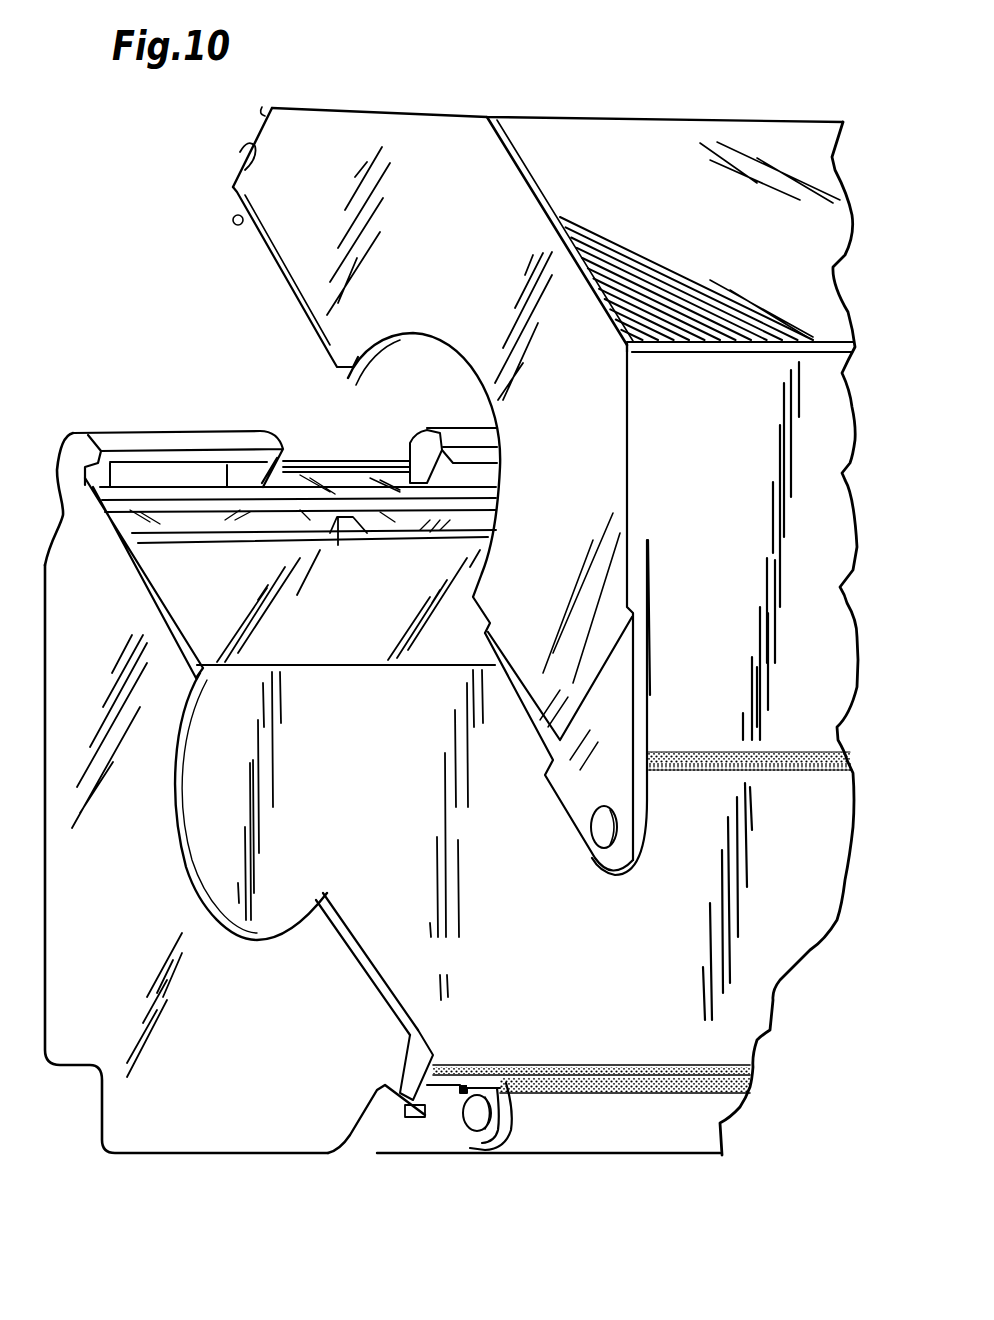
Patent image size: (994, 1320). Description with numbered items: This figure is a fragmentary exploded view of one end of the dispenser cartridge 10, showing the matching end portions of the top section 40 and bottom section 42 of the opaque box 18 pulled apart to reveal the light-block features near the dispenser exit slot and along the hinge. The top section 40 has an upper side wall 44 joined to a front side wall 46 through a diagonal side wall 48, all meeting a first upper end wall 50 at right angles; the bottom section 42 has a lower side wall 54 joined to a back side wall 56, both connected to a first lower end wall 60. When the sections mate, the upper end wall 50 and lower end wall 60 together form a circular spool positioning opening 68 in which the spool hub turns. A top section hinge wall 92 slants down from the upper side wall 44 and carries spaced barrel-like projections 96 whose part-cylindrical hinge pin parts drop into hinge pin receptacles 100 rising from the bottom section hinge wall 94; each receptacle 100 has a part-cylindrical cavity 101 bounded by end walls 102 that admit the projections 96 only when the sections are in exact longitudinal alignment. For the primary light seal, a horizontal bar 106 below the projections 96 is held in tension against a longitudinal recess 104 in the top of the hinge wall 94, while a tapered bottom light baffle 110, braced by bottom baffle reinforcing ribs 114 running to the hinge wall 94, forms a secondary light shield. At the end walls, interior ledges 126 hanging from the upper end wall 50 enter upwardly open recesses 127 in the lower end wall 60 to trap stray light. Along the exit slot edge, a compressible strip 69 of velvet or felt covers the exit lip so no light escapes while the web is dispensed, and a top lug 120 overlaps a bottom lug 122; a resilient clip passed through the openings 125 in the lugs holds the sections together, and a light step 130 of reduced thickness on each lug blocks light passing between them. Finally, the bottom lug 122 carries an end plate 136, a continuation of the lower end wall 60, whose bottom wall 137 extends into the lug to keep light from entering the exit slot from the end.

The dispenser cartridge 10 is at (616, 101).
The box 18 is at (493, 117).
The top section 40 is at (757, 130).
The bottom section 42 is at (687, 1137).
The upper side wall 44 is at (413, 110).
The front side wall 46 is at (827, 422).
The diagonal side wall 48 is at (820, 228).
The first upper end wall 50 is at (347, 127).
The lower side wall 54 is at (237, 1157).
The back side wall 56 is at (383, 752).
The first lower end wall 60 is at (140, 814).
The spool positioning opening 68 is at (362, 352).
The compressible strip 69 is at (788, 772).
The top section hinge wall 92 is at (264, 114).
The bottom section hinge wall 94 is at (52, 547).
The barrel-like projection 96 is at (246, 153).
The hinge pin receptacle 100 is at (127, 437).
The part-cylindrical cavity 101 is at (180, 473).
The end wall of hinge pin receptacle 102 is at (423, 443).
The recess 104 is at (197, 513).
The horizontal bar 106 is at (233, 220).
The bottom light baffle 110 is at (447, 553).
The bottom baffle reinforcing rib 114 is at (347, 523).
The top lug 120 is at (640, 808).
The bottom lug 122 is at (457, 1137).
The opening 125 is at (612, 830).
The interior ledge 126 is at (273, 270).
The interior upwardly open recess 127 is at (130, 528).
The light step 130 is at (447, 1075).
The end plate 136 is at (410, 1056).
The bottom wall 137 is at (393, 1148).